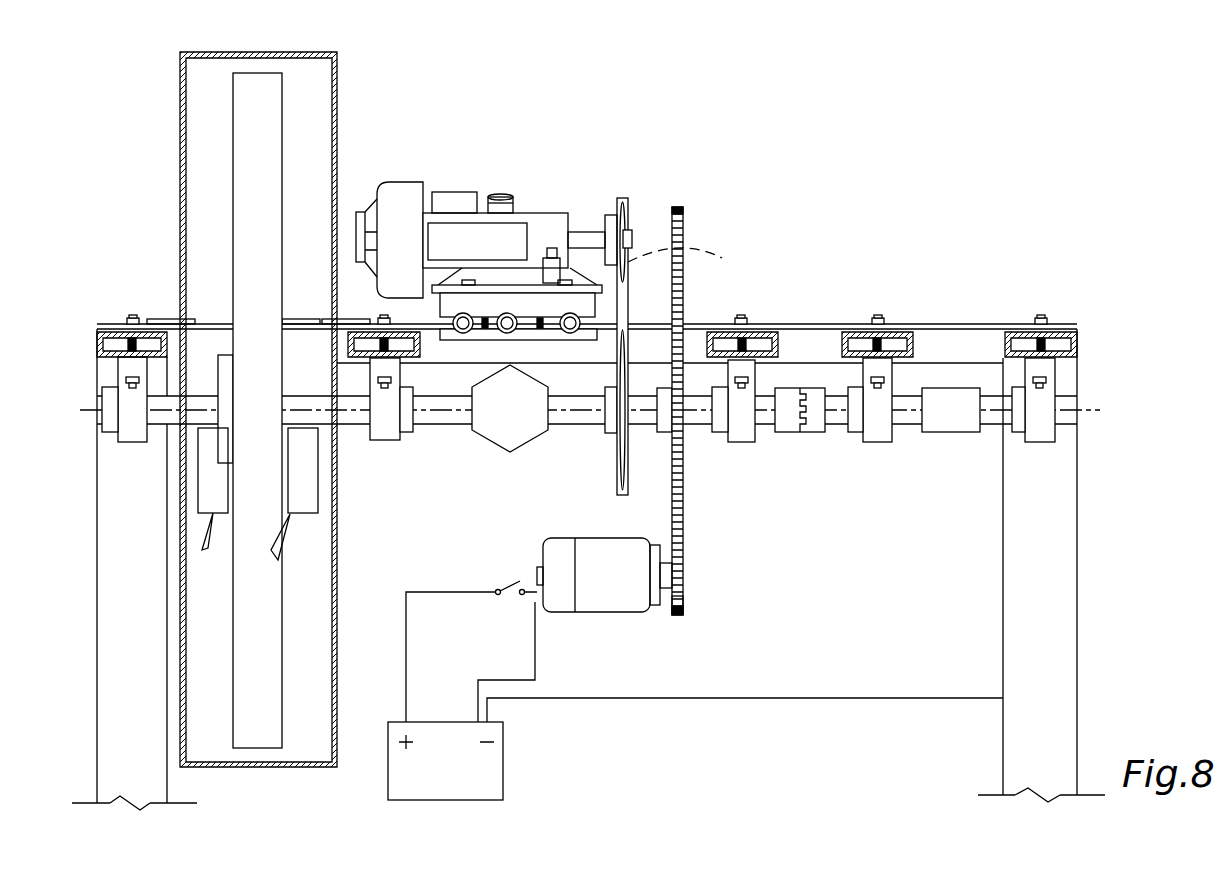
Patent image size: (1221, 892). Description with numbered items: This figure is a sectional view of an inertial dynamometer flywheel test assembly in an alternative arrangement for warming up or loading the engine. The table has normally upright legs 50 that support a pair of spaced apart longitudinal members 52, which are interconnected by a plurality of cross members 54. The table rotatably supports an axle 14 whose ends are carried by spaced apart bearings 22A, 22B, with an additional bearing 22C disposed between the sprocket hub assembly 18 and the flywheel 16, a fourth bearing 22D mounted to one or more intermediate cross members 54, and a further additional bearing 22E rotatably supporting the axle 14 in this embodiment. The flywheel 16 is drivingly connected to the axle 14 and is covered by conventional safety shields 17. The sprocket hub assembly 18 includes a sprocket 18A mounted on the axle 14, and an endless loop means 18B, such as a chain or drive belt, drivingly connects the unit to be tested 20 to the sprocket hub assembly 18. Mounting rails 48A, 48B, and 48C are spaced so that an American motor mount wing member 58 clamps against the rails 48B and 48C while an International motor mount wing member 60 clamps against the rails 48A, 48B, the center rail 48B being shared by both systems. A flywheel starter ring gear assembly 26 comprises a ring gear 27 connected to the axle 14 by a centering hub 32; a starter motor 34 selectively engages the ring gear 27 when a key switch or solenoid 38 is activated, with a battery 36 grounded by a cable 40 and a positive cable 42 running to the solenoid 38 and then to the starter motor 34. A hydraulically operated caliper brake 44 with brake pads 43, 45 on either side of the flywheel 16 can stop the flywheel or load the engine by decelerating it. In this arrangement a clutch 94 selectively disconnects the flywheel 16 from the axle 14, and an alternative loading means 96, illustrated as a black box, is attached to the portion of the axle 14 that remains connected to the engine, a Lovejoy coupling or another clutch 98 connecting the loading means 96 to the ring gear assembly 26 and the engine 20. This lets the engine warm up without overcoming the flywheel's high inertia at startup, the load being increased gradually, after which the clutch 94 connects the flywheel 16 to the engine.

The axle 14 is at (442, 425).
The flywheel 16 is at (240, 152).
The safety shields 17 is at (180, 93).
The sprocket hub assembly 18 is at (588, 452).
The sprocket 18A is at (617, 472).
The endless loop means 18B is at (695, 262).
The unit to be tested 20 is at (530, 200).
The bearing 22A is at (135, 441).
The bearing 22B is at (1043, 442).
The bearing 22C is at (370, 437).
The fourth bearing 22D is at (748, 442).
The additional bearing 22E is at (878, 442).
The flywheel starter ring gear assembly 26 is at (684, 605).
The ring gear 27 is at (684, 577).
The centering hub 32 is at (662, 433).
The starter motor 34 is at (602, 606).
The battery 36 is at (495, 755).
The key switch or solenoid 38 is at (517, 583).
The cable 40 is at (642, 698).
The positive cable 42 is at (406, 637).
The brake pad 43 is at (303, 513).
The caliper brake 44 is at (276, 559).
The brake pad 45 is at (205, 481).
The mounting rail 48A is at (455, 314).
The mounting rail 48B is at (512, 313).
The mounting rail 48C is at (566, 313).
The legs 50 is at (97, 645).
The longitudinal members 52 is at (950, 326).
The cross members 54 is at (110, 333).
The American motor mount wing member 58 is at (448, 342).
The International motor mount wing member 60 is at (587, 332).
The clutch 94 is at (503, 450).
The alternative loading means 96 is at (968, 433).
The Lovejoy coupling or clutch 98 is at (793, 433).